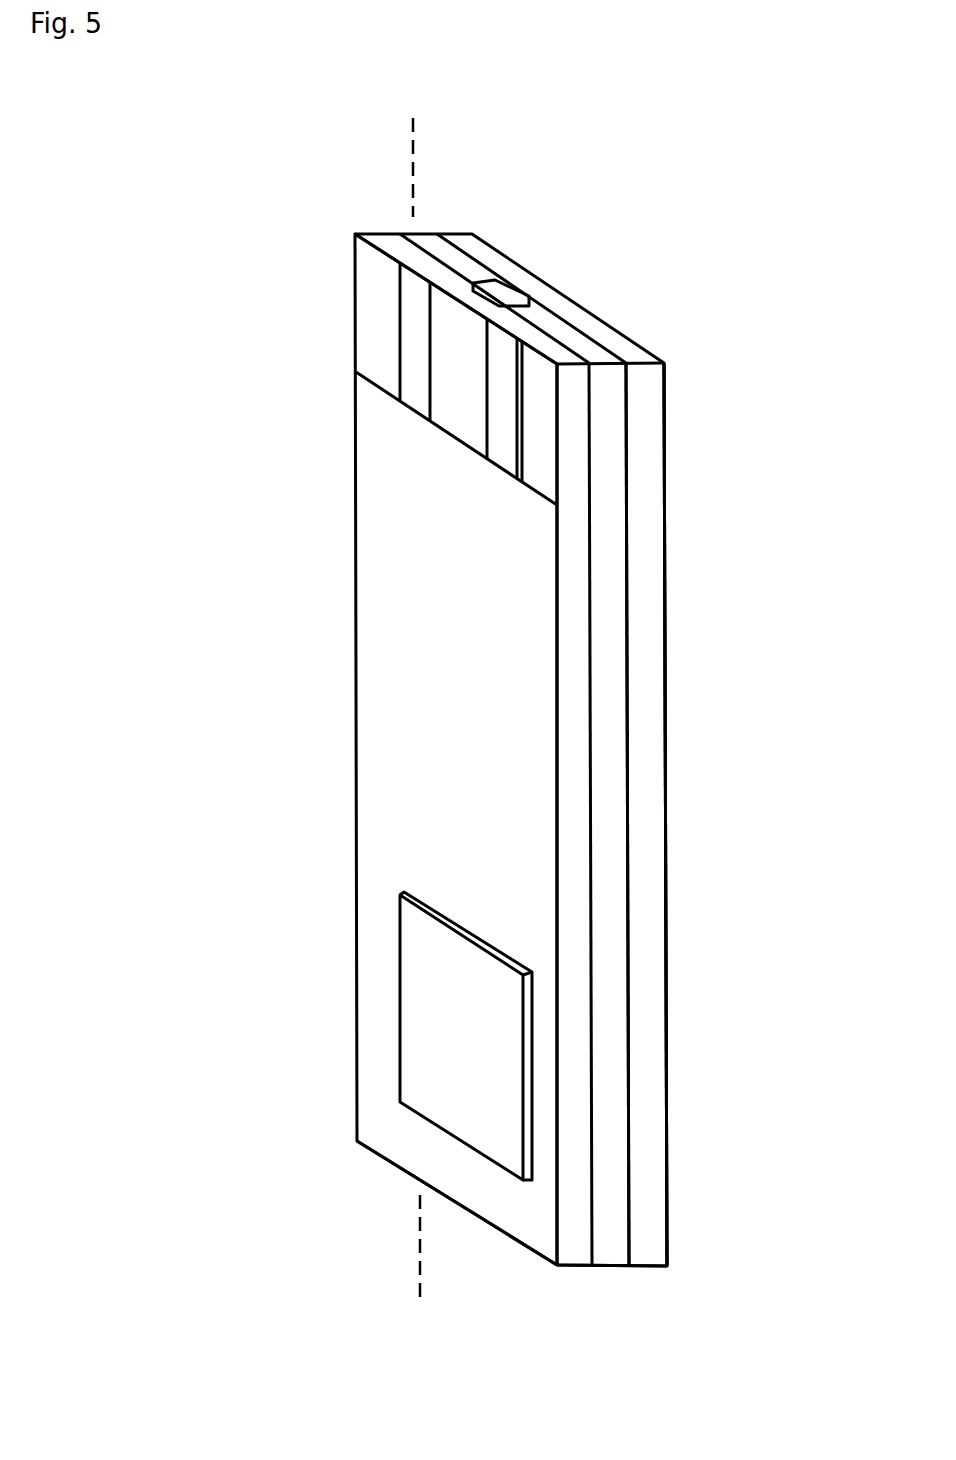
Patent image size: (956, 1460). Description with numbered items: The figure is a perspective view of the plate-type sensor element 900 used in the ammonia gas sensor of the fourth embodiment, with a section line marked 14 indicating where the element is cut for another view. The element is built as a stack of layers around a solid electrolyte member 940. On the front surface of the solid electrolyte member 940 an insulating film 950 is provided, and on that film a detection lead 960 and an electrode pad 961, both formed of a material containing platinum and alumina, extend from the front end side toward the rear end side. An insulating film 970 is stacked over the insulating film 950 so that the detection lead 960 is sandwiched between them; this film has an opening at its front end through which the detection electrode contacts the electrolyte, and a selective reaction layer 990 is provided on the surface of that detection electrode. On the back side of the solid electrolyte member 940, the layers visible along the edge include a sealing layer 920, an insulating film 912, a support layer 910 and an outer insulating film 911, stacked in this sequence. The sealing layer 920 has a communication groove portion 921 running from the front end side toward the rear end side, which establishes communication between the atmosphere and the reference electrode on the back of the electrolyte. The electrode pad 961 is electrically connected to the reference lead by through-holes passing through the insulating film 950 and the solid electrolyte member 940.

The section line 14- 14 is at (413, 118).
The sensor element 900 is at (283, 365).
The support layer 910 is at (642, 983).
The insulating film 911 is at (672, 1142).
The insulating film 912 is at (633, 637).
The sealing layer 920 is at (600, 772).
The communication groove portion 921 is at (530, 299).
The solid electrolyte member 940 is at (595, 1210).
The insulating film 950 is at (380, 338).
The detection lead 960 is at (393, 302).
The electrode pad 961 is at (527, 415).
The insulating film 970 is at (388, 650).
The selective reaction layer 990 is at (388, 968).